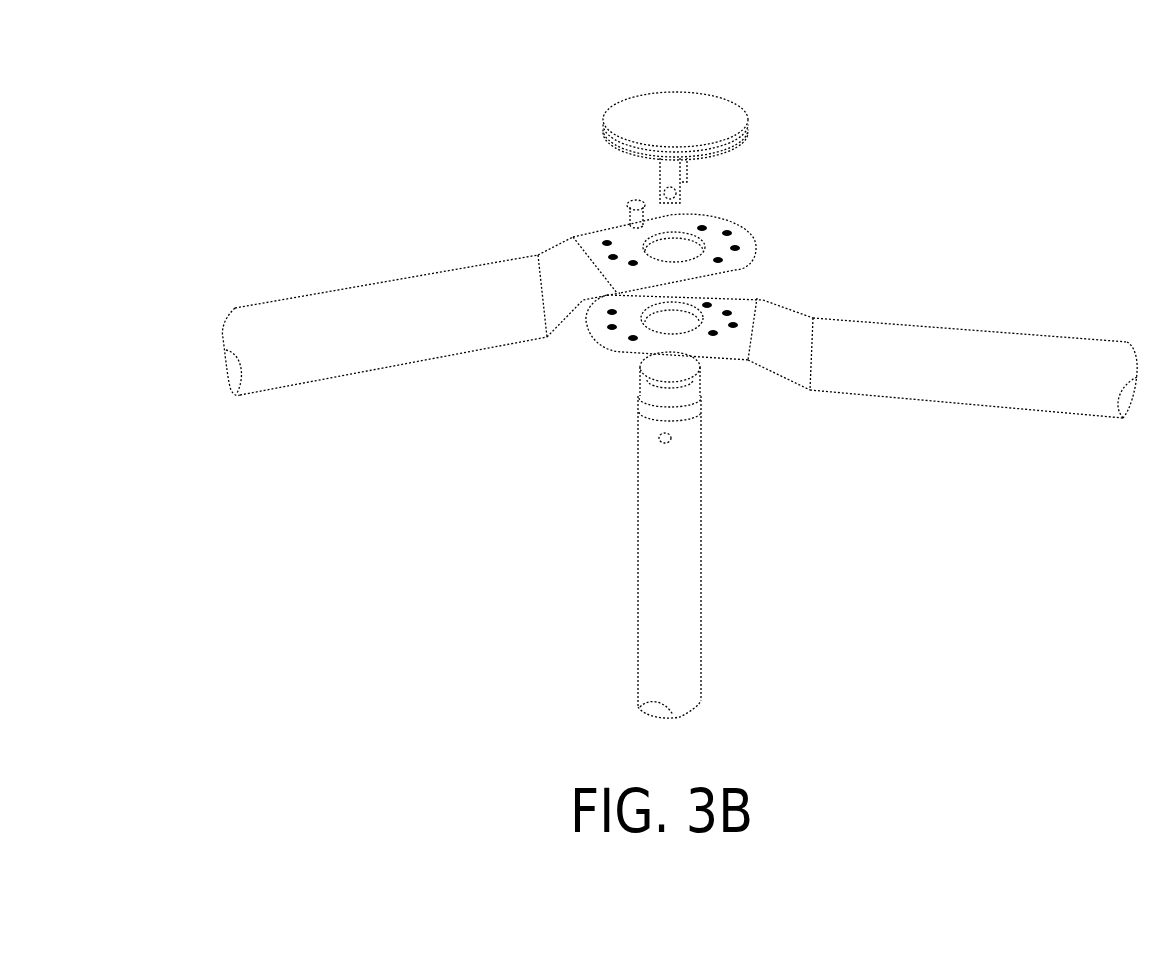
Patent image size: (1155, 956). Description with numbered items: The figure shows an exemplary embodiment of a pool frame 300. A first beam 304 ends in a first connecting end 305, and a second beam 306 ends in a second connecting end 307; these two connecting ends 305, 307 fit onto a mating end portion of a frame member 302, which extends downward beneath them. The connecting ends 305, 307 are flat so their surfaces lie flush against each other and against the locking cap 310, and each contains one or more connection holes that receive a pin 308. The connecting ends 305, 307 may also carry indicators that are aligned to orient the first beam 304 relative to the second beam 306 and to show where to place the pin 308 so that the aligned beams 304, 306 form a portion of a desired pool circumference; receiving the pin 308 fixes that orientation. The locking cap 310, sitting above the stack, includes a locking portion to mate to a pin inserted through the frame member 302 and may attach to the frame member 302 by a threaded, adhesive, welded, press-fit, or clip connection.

The pool frame 300 is at (215, 83).
The frame member 302 is at (632, 570).
The first beam 304 is at (380, 280).
The first connecting end 305 is at (748, 233).
The second beam 306 is at (895, 323).
The second connecting end 307 is at (605, 355).
The pin 308 is at (627, 205).
The locking cap 310 is at (713, 98).